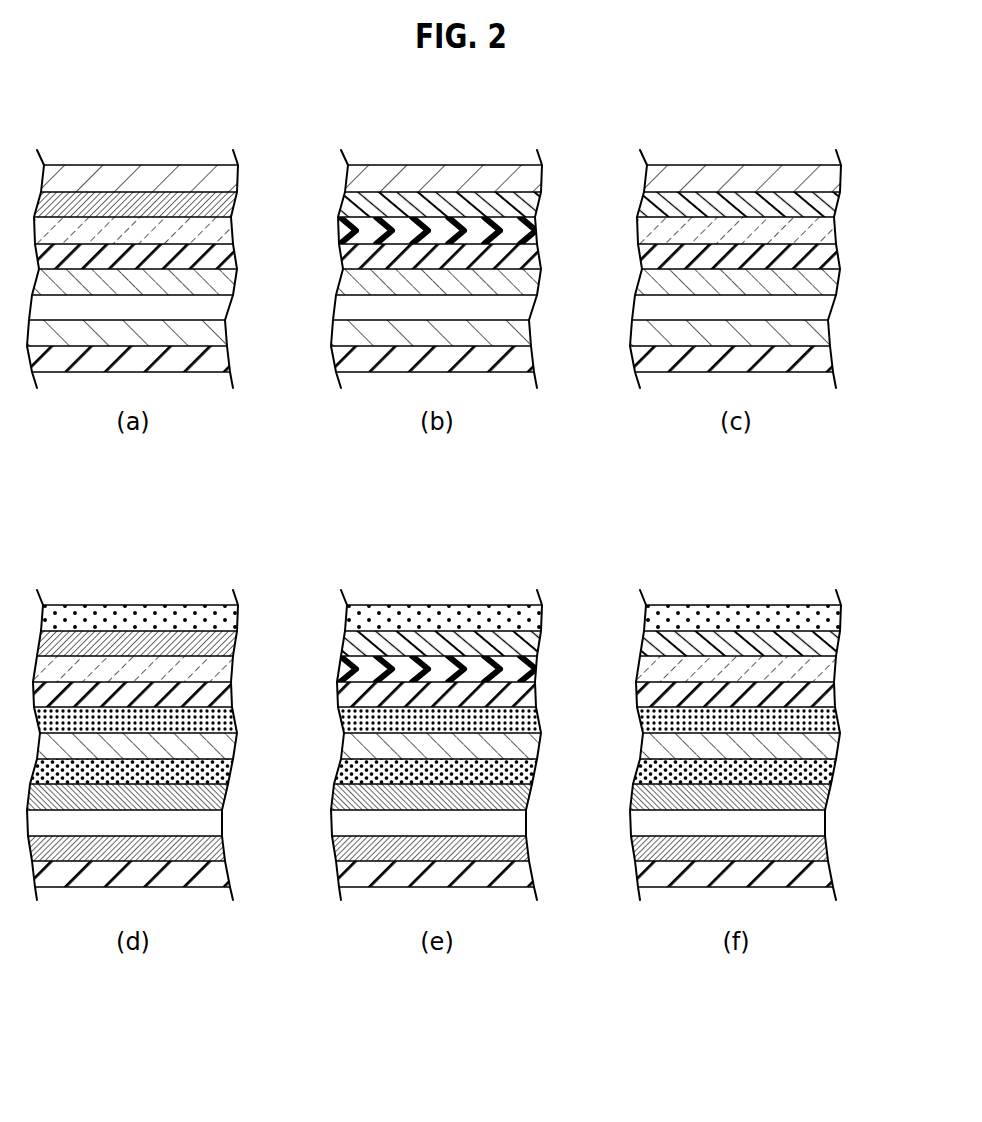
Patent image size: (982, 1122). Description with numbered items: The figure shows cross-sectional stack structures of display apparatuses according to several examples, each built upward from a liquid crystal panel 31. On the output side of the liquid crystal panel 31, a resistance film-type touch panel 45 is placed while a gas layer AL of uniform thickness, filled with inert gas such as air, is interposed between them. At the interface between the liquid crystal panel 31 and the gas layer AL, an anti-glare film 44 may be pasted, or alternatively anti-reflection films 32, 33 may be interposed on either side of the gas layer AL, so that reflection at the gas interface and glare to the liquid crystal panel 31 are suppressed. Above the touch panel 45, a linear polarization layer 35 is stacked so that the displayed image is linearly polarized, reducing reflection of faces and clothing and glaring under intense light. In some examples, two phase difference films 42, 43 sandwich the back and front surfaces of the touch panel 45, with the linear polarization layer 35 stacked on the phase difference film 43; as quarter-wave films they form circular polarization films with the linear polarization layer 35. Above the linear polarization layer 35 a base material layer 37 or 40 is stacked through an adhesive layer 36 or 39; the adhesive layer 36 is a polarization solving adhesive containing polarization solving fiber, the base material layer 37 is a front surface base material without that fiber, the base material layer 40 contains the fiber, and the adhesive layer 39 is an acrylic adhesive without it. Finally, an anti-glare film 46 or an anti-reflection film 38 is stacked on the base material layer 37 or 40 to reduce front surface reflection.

The liquid crystal panel 31 is at (222, 359).
The anti-reflection film 32 is at (222, 844).
The anti-reflection film 33 is at (222, 792).
The linear polarization layer 35 is at (222, 251).
The adhesive layer 36 is at (222, 225).
The base material layer 37 is at (222, 199).
The anti-reflection film 38 is at (222, 612).
The adhesive layer 39 is at (458, 447).
The base material layer 40 is at (607, 421).
The phase difference film 42 is at (222, 767).
The phase difference film 43 is at (222, 716).
The anti-glare film 44 is at (222, 332).
The touch panel 45 is at (222, 279).
The anti-glare film 46 is at (222, 172).
The gas layer AL is at (222, 306).